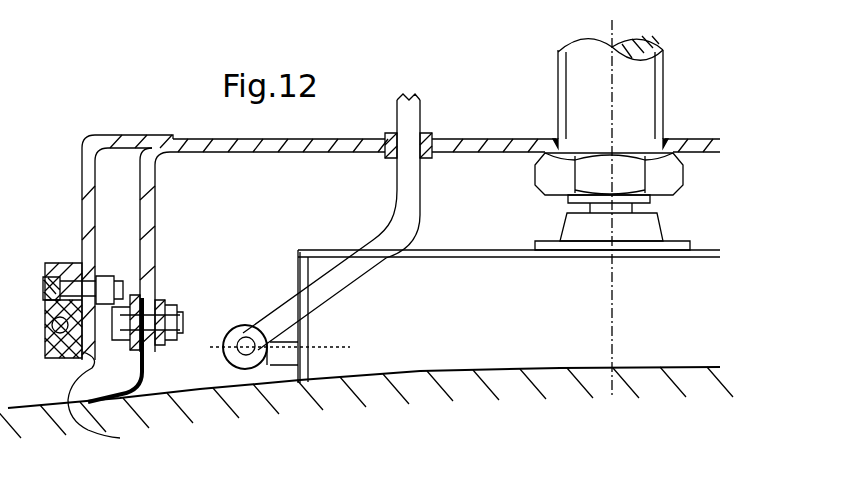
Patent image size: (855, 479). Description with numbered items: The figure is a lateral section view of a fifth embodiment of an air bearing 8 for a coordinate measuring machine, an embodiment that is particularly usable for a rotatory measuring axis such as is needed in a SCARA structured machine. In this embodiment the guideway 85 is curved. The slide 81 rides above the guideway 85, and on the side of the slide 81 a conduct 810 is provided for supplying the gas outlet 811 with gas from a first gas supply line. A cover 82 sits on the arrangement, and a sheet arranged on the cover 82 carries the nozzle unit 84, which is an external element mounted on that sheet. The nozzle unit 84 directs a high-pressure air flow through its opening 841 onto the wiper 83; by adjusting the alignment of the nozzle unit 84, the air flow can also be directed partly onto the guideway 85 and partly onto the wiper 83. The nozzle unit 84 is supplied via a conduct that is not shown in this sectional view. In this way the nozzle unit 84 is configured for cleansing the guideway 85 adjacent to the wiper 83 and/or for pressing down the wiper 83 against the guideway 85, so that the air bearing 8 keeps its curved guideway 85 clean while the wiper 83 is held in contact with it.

The air bearing 8 is at (401, 214).
The slide 81 is at (690, 325).
The gas outlet 811 is at (453, 370).
The cover 82 is at (231, 208).
The wiper 83 is at (148, 380).
The nozzle unit 84 is at (53, 262).
The opening 841 is at (118, 404).
The guideway 85 is at (356, 423).
The conduct 810 is at (413, 195).